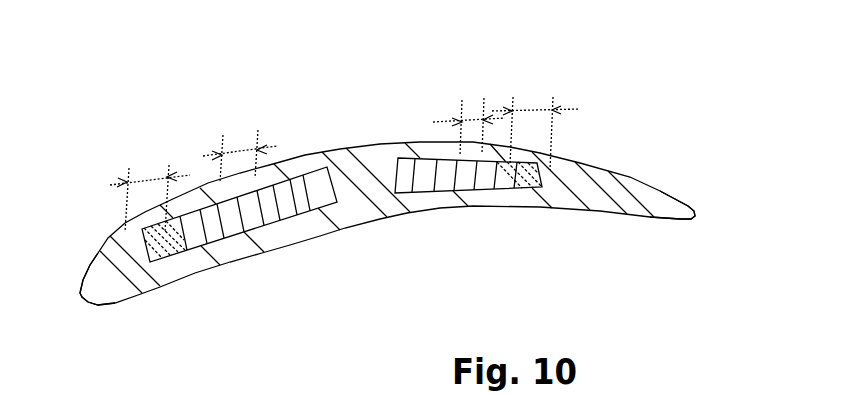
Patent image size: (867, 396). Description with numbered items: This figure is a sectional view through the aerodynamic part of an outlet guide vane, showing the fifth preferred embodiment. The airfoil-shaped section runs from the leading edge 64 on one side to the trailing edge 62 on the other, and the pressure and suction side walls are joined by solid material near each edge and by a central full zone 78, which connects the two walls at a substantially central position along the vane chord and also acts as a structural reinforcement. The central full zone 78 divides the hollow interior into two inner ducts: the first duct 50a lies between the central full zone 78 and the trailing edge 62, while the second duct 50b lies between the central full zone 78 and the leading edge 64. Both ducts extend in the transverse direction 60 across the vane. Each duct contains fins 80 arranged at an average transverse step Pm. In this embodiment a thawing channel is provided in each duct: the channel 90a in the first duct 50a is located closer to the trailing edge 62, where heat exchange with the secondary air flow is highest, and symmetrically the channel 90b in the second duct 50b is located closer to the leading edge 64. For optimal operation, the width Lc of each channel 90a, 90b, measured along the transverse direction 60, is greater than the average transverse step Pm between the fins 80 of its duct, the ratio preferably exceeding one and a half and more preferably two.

The transverse direction 60 is at (423, 113).
The trailing edge 62 is at (690, 207).
The leading edge 64 is at (92, 297).
The central full zone 78 is at (356, 178).
The fins 80 is at (330, 190).
The first duct 50a is at (467, 201).
The second duct 50b is at (222, 246).
The thawing channel 90a is at (514, 182).
The thawing channel 90b is at (161, 242).
The channel width Lc is at (142, 180).
The average transverse step Pm is at (233, 152).